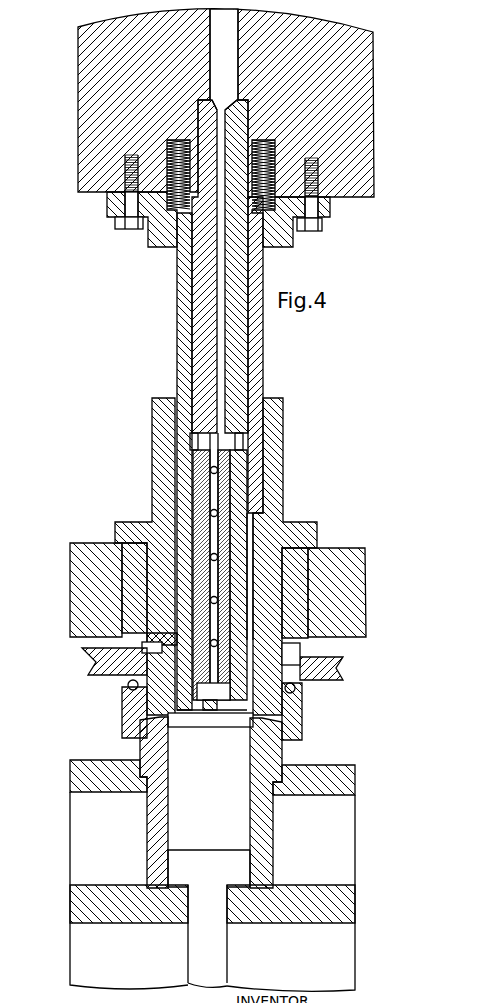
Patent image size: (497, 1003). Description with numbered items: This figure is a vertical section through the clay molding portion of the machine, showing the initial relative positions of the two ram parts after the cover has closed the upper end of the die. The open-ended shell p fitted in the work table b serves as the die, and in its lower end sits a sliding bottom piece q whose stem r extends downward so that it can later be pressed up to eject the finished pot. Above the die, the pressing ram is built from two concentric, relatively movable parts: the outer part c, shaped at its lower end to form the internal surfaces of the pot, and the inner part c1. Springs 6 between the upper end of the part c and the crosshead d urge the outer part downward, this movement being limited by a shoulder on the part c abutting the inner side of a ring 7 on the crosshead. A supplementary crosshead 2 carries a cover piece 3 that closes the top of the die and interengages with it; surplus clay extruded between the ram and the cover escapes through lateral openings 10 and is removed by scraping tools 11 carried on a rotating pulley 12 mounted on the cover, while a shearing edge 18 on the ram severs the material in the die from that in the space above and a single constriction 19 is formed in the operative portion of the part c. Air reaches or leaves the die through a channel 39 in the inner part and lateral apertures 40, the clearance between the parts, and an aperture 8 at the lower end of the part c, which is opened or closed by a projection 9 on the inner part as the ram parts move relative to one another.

The crosshead d is at (92, 121).
The springs 6 is at (234, 100).
The ring 7 is at (150, 240).
The pressing ram outer part c is at (184, 337).
The pressing ram inner part c1 is at (195, 305).
The supplementary crosshead 2 is at (82, 556).
The shearing edge 18 is at (250, 587).
The constriction 19 is at (165, 637).
The lateral openings 10 is at (157, 650).
The scraping tool 11 is at (300, 648).
The rotating pulley 12 is at (128, 686).
The cover piece 3 is at (132, 702).
The channel 39 is at (216, 490).
The lateral apertures 40 is at (210, 469).
The aperture 8 is at (212, 712).
The projection 9 is at (222, 720).
The die shell p is at (138, 749).
The work table b is at (340, 838).
The sliding bottom piece q is at (180, 873).
The stem r is at (197, 957).